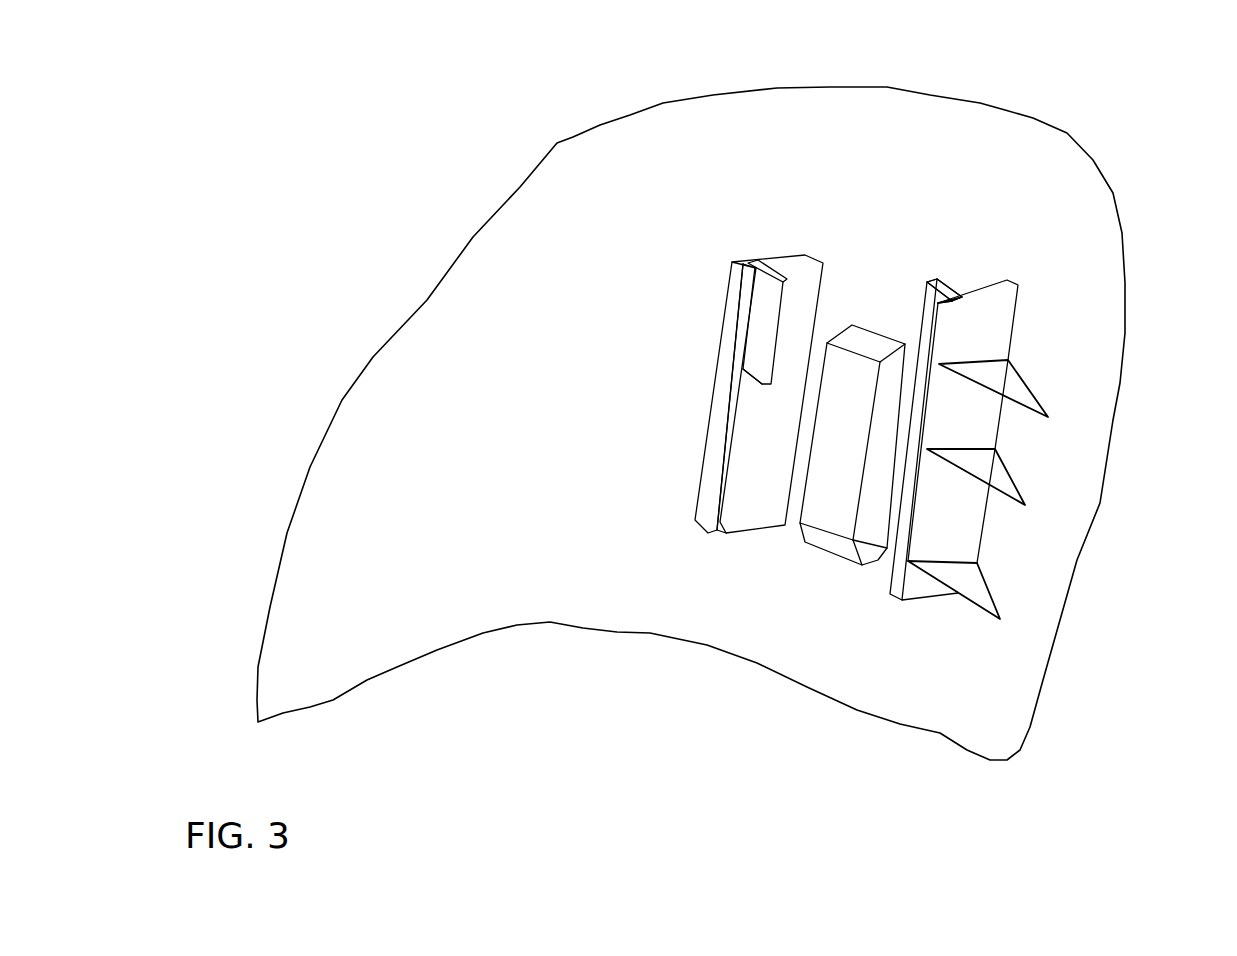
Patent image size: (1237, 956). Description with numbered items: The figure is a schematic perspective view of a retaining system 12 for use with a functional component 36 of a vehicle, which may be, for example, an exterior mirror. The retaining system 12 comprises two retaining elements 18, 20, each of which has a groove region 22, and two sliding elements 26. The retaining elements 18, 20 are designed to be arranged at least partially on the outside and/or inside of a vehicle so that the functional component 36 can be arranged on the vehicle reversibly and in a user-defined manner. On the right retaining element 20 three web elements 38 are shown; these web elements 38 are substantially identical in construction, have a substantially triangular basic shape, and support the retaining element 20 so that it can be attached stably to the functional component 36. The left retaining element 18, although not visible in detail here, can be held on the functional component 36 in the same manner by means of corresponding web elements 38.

The retaining system 12 is at (1060, 281).
The retaining element 18 is at (763, 511).
The retaining element 20 is at (920, 604).
The groove region 22 is at (975, 277).
The sliding element 26 is at (762, 241).
The functional component 36 is at (573, 166).
The web element 38 is at (1040, 386).